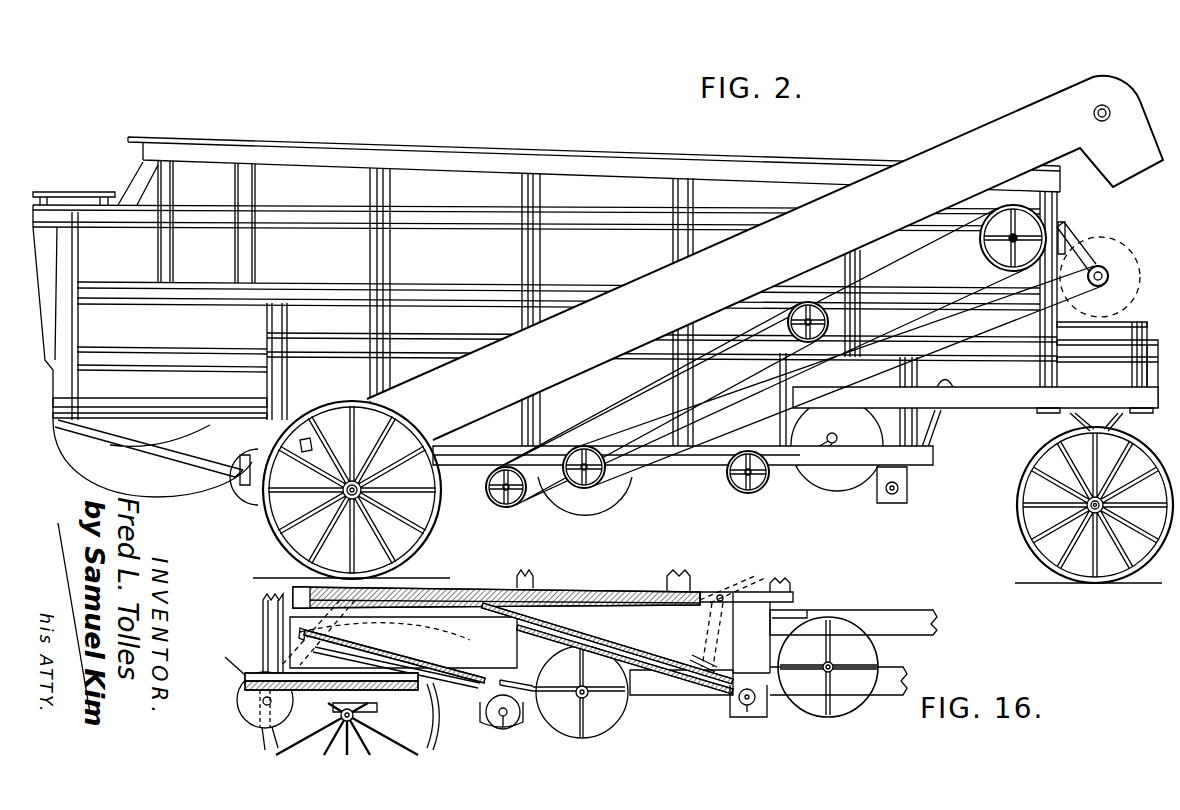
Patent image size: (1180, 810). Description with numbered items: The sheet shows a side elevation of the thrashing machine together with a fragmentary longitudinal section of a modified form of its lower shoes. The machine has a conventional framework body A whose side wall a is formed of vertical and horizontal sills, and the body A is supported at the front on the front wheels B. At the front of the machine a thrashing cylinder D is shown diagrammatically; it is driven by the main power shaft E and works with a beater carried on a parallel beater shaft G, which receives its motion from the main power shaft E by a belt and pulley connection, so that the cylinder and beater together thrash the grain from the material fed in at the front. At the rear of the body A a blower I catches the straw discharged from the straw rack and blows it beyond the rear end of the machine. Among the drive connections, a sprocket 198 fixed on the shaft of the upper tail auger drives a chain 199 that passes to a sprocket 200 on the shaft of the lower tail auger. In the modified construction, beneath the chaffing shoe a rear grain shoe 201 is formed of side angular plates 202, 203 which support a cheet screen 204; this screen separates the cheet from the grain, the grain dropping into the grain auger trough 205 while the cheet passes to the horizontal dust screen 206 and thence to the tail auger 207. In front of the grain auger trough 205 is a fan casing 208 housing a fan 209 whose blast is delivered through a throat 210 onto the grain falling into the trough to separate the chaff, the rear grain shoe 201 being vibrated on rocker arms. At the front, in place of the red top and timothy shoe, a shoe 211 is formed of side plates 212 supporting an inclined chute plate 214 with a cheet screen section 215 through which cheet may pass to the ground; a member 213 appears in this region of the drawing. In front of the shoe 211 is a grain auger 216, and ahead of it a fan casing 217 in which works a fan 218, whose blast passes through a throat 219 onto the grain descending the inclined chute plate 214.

In FIG. 2, the body A is at (380, 140).
In FIG. 2, the side wall a is at (595, 304).
In FIG. 2, the front wheels B is at (1142, 458).
In FIG. 2, the thrashing cylinder D is at (1102, 238).
In FIG. 2, the main power shaft E is at (1108, 271).
In FIG. 2, the beater shaft G is at (1000, 252).
In FIG. 2, the blower I is at (152, 458).
In FIG. 2, the sprocket 198 is at (309, 444).
In FIG. 2, the chain 199 is at (284, 470).
In FIG. 2, the sprocket 200 is at (262, 488).
In FIG. 16, the rear grain shoe 201 is at (468, 665).
In FIG. 16, the side angular plate 202 is at (417, 684).
In FIG. 16, the side angular plate 203 is at (447, 625).
In FIG. 16, the cheet screen 204 is at (405, 655).
In FIG. 16, the grain auger trough 205 is at (508, 728).
In FIG. 16, the horizontal dust screen 206 is at (331, 694).
In FIG. 16, the tail auger 207 is at (243, 727).
In FIG. 16, the fan casing 208 is at (628, 716).
In FIG. 16, the fan 209 is at (612, 728).
In FIG. 16, the throat 210 is at (522, 683).
In FIG. 16, the shoe 211 is at (720, 642).
In FIG. 16, the side plates 212 is at (607, 643).
In FIG. 16, the frame beam 213 is at (648, 660).
In FIG. 16, the inclined chute plate 214 is at (597, 640).
In FIG. 16, the cheet screen section 215 is at (693, 662).
In FIG. 16, the grain auger 216 is at (749, 712).
In FIG. 16, the fan casing 217 is at (818, 708).
In FIG. 16, the fan 218 is at (838, 705).
In FIG. 16, the throat 219 is at (763, 640).